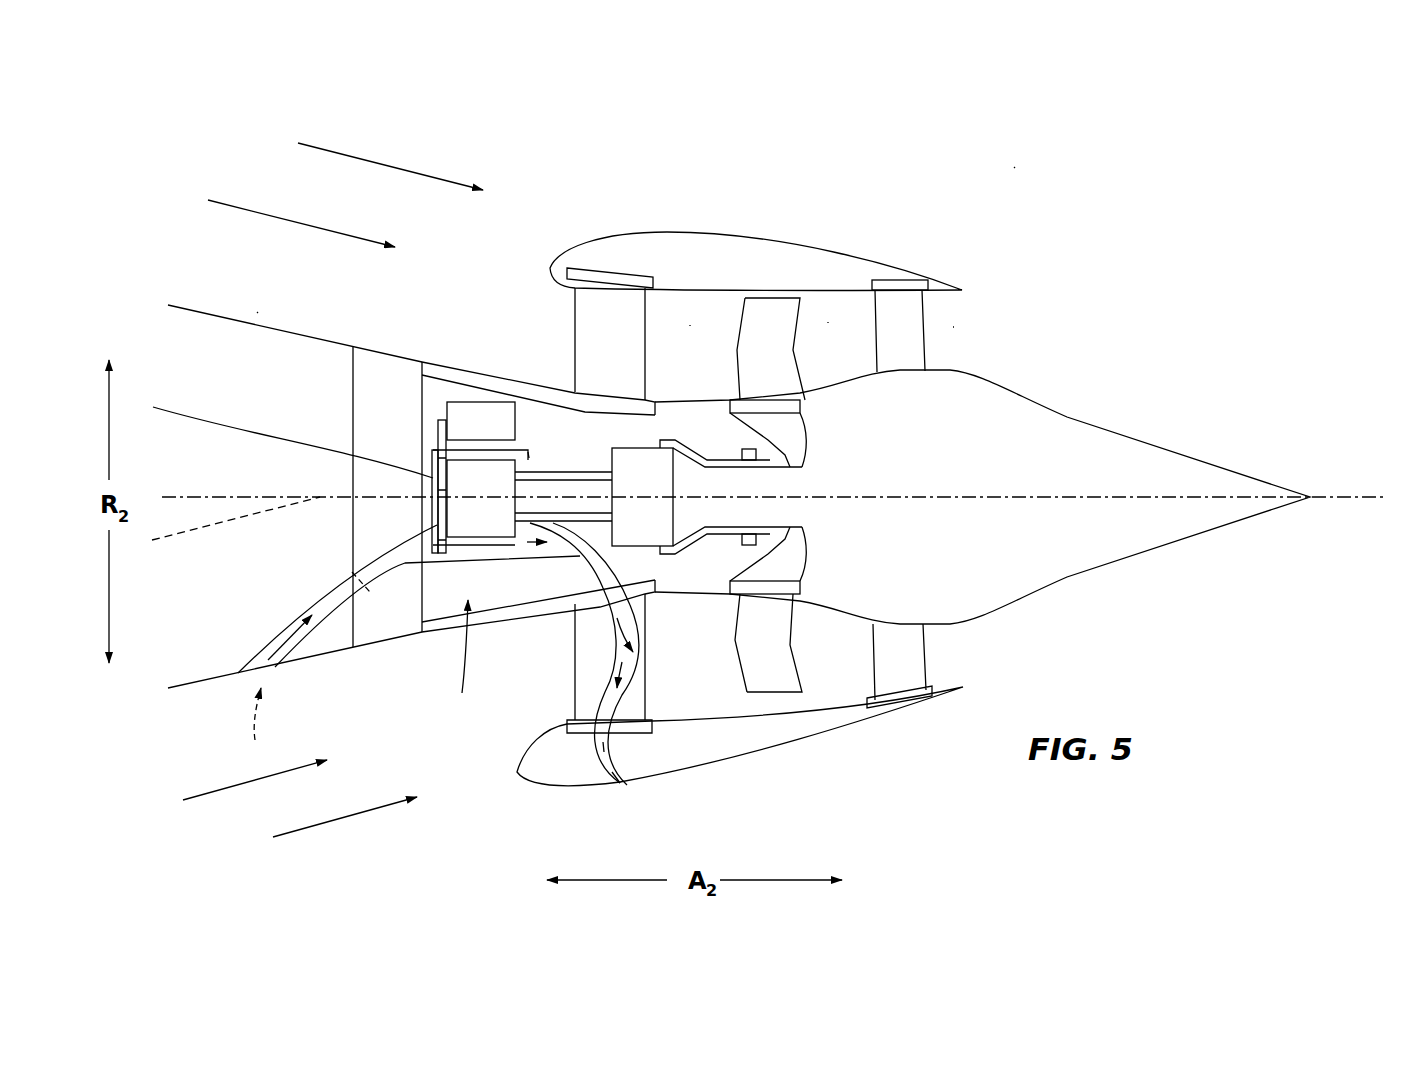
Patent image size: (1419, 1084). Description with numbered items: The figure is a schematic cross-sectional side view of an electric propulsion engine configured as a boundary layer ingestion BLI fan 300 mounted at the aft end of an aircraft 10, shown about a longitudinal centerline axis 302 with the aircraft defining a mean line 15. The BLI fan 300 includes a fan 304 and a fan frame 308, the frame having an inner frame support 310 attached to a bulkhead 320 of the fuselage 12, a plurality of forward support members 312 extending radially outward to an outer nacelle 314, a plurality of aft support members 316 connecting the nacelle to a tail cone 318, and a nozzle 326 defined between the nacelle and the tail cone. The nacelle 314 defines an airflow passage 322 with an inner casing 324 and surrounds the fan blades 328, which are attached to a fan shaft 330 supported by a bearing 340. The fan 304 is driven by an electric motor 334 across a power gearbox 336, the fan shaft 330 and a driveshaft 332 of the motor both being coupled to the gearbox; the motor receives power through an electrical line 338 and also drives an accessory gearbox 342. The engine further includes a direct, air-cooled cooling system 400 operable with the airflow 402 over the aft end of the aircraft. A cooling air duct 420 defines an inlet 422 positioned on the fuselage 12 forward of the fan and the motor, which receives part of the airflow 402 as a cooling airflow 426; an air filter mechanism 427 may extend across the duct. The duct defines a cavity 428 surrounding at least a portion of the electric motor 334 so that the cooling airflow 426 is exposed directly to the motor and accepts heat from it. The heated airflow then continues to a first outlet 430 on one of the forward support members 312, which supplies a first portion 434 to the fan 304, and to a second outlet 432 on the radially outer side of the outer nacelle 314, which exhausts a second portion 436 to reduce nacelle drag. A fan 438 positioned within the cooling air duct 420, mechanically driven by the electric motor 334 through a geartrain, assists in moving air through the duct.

The aircraft 10 is at (257, 312).
The fuselage 12 is at (222, 682).
The mean line 15 is at (187, 530).
The BLI fan 300 is at (1015, 167).
The longitudinal centerline axis 302 is at (1340, 497).
The fan 304 is at (828, 322).
The fan frame 308 is at (537, 327).
The inner frame support 310 is at (498, 378).
The forward support members 312 is at (604, 300).
The outer nacelle 314 is at (670, 232).
The aft support members 316 is at (902, 300).
The tail cone 318 is at (1180, 447).
The bulkhead 320 is at (357, 410).
The airflow passage 322 is at (690, 325).
The inner casing 324 is at (720, 397).
The nozzle 326 is at (953, 327).
The fan blades 328 is at (775, 680).
The fan shaft 330 is at (800, 467).
The driveshaft 332 is at (563, 523).
The electric motor 334 is at (473, 537).
The power gearbox 336 is at (665, 515).
The electrical line 338 is at (190, 418).
The bearing 340 is at (748, 448).
The accessory gearbox 342 is at (465, 413).
The cooling system 400 is at (461, 658).
The airflow 402 is at (403, 168).
The cooling air duct 420 is at (318, 592).
The inlet 422 is at (256, 728).
The cooling airflow 426 is at (295, 620).
The air filter mechanism 427 is at (347, 568).
The cavity 428 is at (525, 460).
The first outlet 430 is at (653, 658).
The second outlet 432 is at (627, 785).
The first portion 434 is at (633, 666).
The second portion 436 is at (604, 758).
The fan 438 is at (430, 548).